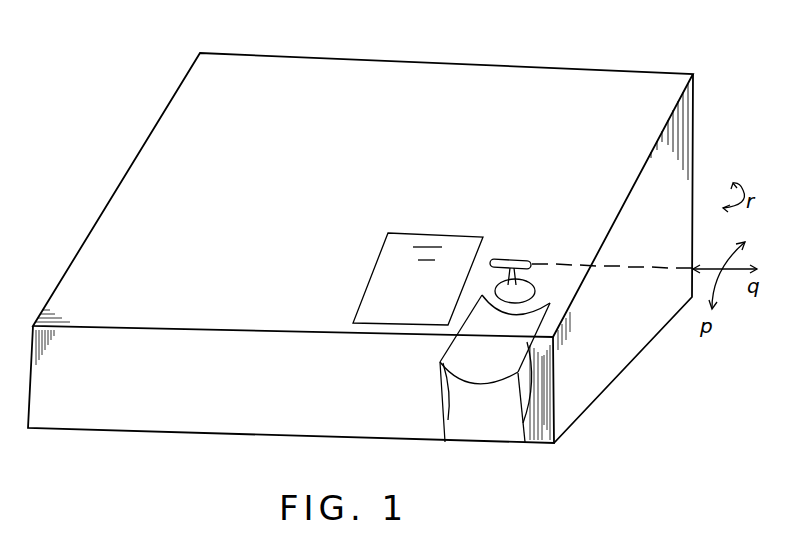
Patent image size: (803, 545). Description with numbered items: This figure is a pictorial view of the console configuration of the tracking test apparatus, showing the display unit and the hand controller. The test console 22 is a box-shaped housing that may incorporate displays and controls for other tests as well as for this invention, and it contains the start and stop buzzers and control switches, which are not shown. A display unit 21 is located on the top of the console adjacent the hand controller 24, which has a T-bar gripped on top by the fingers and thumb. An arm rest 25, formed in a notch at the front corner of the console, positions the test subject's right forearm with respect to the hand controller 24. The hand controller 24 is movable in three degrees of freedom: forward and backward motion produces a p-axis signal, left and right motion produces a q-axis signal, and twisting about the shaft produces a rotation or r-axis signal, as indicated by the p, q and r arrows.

The display unit 21 is at (428, 242).
The test console 22 is at (456, 73).
The hand controller 24 is at (513, 261).
The arm rest 25 is at (465, 335).